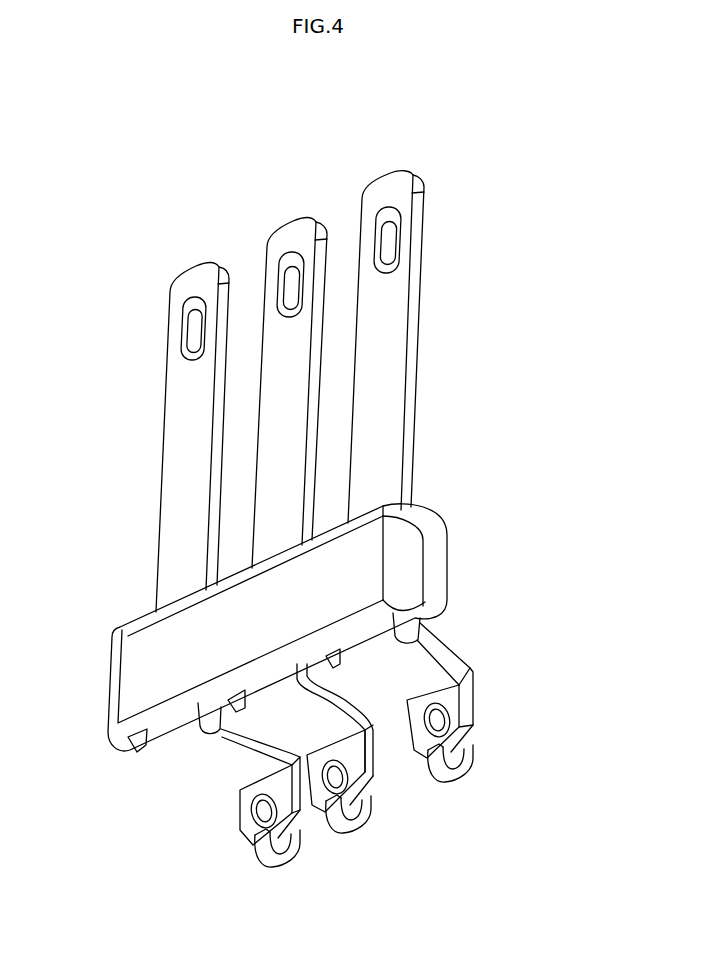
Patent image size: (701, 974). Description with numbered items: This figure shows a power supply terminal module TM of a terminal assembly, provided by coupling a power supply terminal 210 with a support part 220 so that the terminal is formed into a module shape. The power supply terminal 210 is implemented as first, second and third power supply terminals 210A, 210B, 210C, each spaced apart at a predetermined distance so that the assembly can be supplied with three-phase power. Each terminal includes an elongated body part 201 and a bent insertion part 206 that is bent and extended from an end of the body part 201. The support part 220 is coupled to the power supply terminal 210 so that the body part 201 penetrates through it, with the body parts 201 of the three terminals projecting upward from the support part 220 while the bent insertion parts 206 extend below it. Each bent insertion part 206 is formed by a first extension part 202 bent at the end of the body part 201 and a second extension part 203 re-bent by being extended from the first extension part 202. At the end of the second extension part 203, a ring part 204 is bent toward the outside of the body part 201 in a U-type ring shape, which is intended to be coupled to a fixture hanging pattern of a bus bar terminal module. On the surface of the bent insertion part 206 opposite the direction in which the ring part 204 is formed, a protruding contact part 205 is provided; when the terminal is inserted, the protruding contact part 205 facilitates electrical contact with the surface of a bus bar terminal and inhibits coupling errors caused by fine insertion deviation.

The power supply terminal module TM is at (525, 182).
The body part 201 is at (187, 458).
The power supply terminal 210 is at (403, 60).
The first power supply terminal 210A is at (190, 265).
The second power supply terminal 210B is at (280, 222).
The third power supply terminal 210C is at (373, 190).
The support part 220 is at (430, 566).
The first extension part 202 is at (192, 755).
The second extension part 203 is at (283, 805).
The ring part 204 is at (273, 860).
The protruding contact part 205 is at (262, 812).
The bent insertion part 206 is at (197, 800).